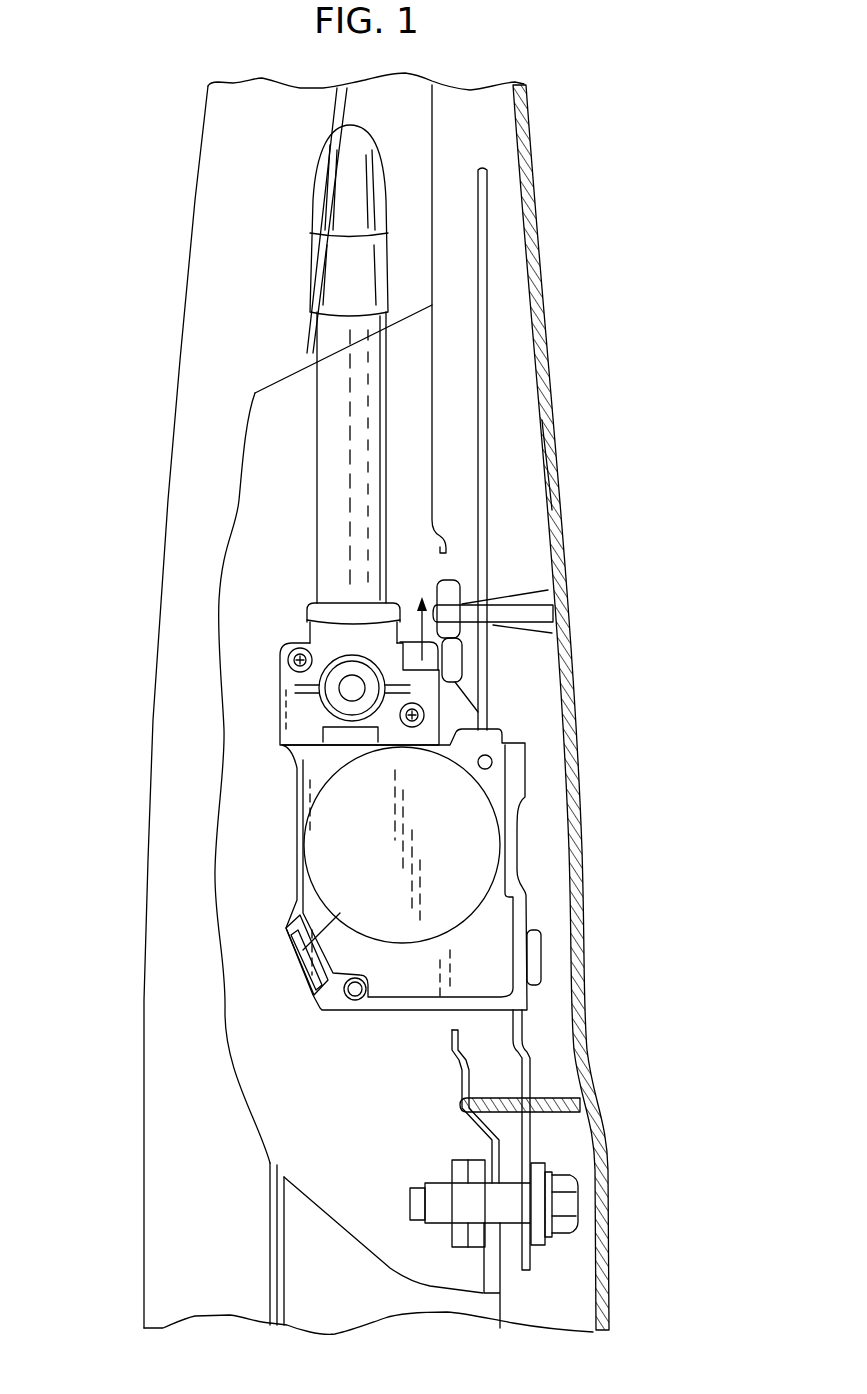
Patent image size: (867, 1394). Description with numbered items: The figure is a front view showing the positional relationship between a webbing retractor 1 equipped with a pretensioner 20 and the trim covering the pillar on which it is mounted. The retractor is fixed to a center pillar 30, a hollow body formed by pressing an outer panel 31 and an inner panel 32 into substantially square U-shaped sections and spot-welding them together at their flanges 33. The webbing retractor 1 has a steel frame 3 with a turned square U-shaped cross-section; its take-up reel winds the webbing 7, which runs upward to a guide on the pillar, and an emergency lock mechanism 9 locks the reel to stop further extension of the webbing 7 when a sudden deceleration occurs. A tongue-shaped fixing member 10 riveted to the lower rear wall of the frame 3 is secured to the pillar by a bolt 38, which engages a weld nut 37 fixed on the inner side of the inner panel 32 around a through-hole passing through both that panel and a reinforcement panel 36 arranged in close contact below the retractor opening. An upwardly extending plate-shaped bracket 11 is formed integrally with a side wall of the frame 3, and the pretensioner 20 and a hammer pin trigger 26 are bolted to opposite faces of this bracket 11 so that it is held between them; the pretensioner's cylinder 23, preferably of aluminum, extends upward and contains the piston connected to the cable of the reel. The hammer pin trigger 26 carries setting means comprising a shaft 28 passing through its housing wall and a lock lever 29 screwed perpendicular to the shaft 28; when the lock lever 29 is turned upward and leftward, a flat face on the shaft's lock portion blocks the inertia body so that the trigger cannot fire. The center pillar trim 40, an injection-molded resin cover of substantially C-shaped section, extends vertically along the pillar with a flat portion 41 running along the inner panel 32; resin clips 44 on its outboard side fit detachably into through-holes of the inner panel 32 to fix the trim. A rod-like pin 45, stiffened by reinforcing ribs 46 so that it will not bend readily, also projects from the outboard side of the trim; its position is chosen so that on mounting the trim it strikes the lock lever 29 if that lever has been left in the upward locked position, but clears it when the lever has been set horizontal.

The webbing retractor 1 is at (358, 869).
The frame 3 is at (530, 912).
The webbing 7 is at (488, 366).
The emergency lock mechanism 9 is at (467, 835).
The fixing member 10 is at (531, 1073).
The bracket 11 is at (278, 697).
The pretensioner 20 is at (248, 364).
The cylinder 23 is at (333, 492).
The hammer pin trigger 26 is at (326, 631).
The shaft 28 is at (420, 652).
The lock lever 29 is at (450, 658).
The center pillar 30 is at (181, 259).
The outer panel 31 is at (183, 1155).
The inner panel 32 is at (460, 1080).
The flanges 33 is at (270, 1255).
The reinforcement panel 36 is at (484, 1267).
The weld nut 37 is at (463, 1167).
The bolt 38 is at (567, 1205).
The center pillar trim 40 is at (549, 274).
The flat portion 41 is at (559, 484).
The resin clips 44 is at (543, 1112).
The pin 45 is at (498, 603).
The reinforcing ribs 46 is at (551, 629).